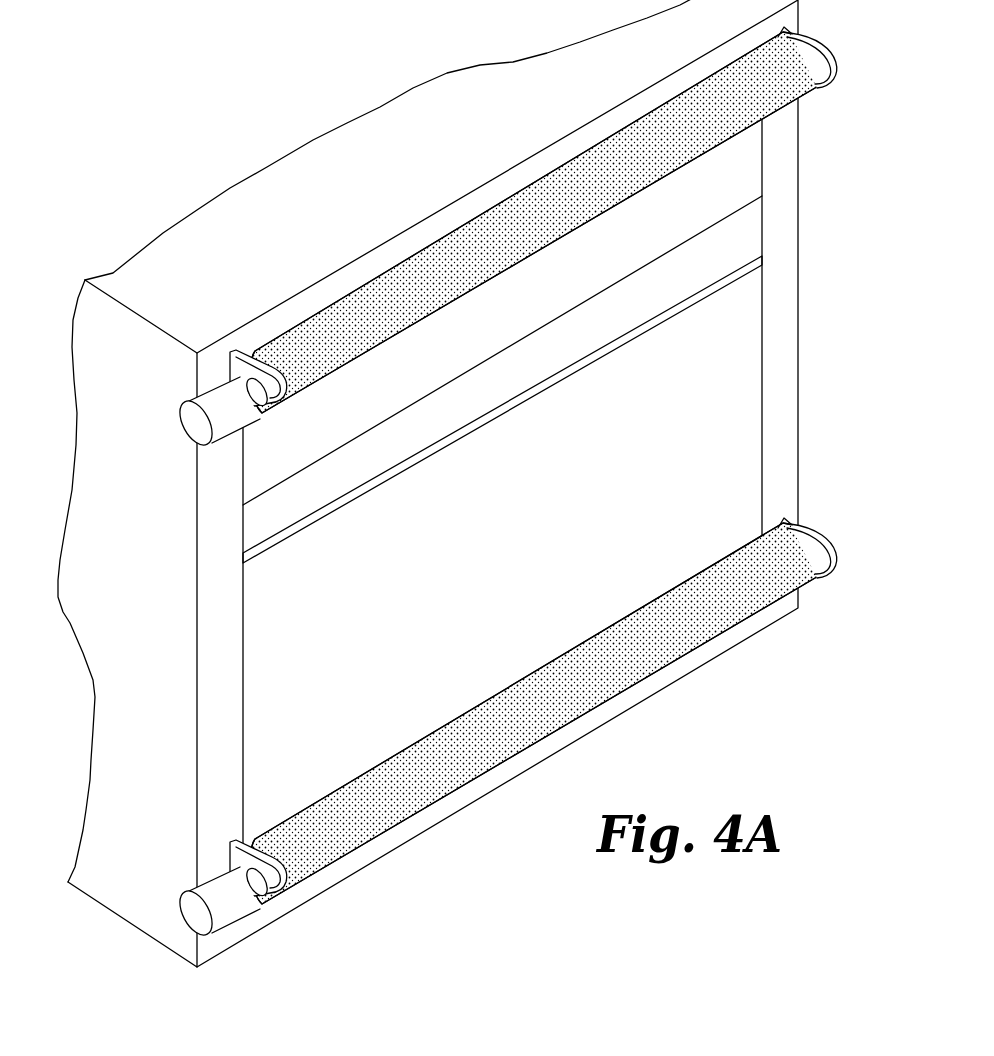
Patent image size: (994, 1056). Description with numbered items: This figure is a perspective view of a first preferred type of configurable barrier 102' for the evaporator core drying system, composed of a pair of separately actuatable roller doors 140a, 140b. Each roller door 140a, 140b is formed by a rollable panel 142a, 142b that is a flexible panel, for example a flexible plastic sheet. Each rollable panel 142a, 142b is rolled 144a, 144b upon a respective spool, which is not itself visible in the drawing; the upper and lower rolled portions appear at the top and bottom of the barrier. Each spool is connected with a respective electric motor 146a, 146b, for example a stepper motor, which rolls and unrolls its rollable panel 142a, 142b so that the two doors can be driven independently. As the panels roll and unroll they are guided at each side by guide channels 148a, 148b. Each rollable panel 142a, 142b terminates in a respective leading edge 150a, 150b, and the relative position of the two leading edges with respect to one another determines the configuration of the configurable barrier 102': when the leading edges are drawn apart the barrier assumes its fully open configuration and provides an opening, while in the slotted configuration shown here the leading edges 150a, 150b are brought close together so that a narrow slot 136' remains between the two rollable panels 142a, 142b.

The configurable barrier 102' is at (428, 483).
The slot 136' is at (492, 482).
The roller door 140a is at (212, 465).
The roller door 140b is at (225, 812).
The rollable panel 142a is at (720, 175).
The rollable panel 142b is at (710, 413).
The rolled portion of rollable panel 144a is at (455, 245).
The rolled portion of rollable panel 144b is at (687, 630).
The electric motor 146a is at (215, 400).
The electric motor 146b is at (208, 890).
The guide channel 148a is at (233, 630).
The guide channel 148b is at (772, 480).
The leading edge 150a is at (680, 248).
The leading edge 150b is at (267, 547).